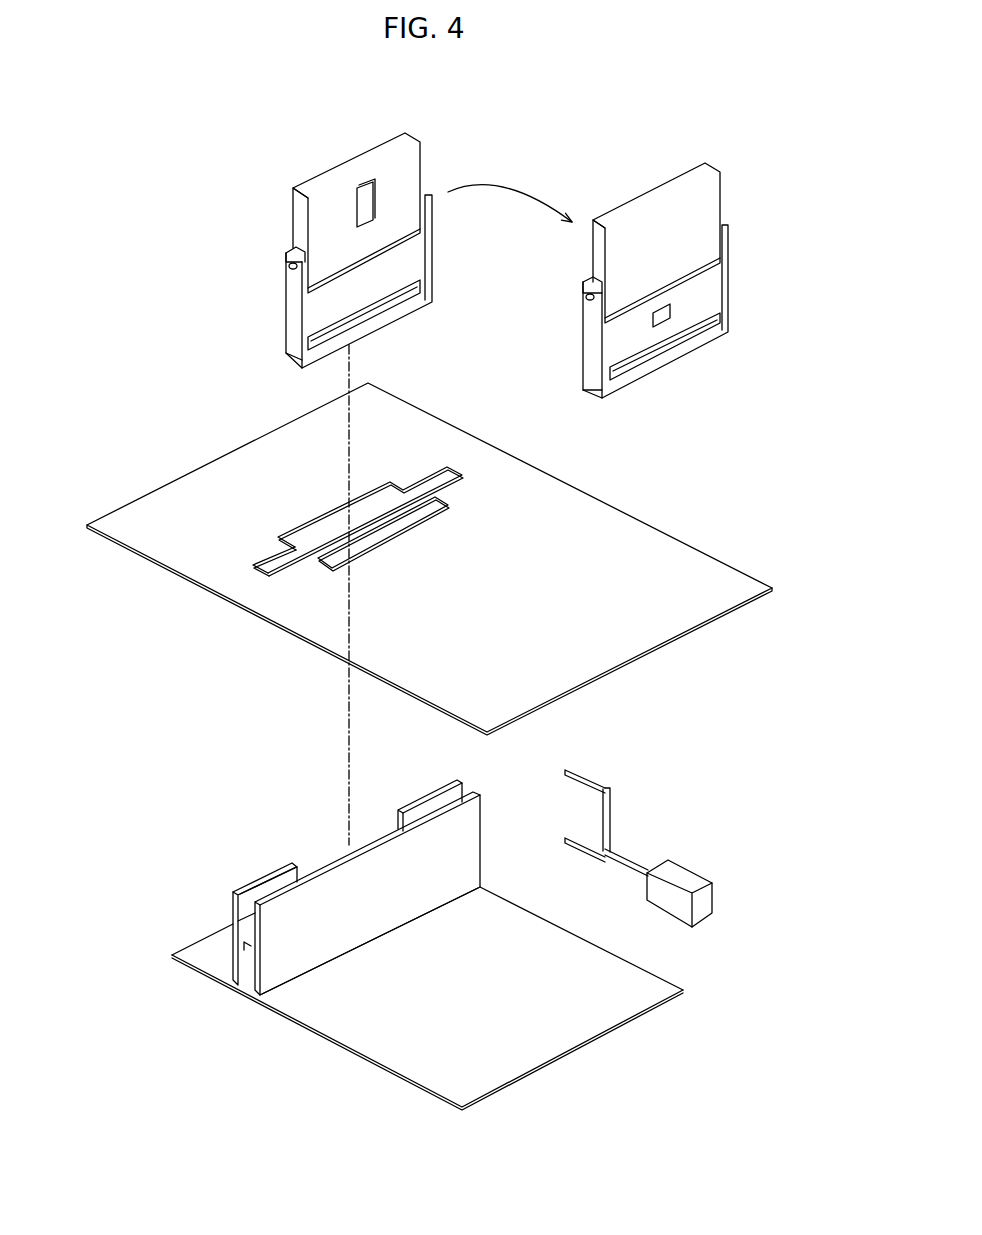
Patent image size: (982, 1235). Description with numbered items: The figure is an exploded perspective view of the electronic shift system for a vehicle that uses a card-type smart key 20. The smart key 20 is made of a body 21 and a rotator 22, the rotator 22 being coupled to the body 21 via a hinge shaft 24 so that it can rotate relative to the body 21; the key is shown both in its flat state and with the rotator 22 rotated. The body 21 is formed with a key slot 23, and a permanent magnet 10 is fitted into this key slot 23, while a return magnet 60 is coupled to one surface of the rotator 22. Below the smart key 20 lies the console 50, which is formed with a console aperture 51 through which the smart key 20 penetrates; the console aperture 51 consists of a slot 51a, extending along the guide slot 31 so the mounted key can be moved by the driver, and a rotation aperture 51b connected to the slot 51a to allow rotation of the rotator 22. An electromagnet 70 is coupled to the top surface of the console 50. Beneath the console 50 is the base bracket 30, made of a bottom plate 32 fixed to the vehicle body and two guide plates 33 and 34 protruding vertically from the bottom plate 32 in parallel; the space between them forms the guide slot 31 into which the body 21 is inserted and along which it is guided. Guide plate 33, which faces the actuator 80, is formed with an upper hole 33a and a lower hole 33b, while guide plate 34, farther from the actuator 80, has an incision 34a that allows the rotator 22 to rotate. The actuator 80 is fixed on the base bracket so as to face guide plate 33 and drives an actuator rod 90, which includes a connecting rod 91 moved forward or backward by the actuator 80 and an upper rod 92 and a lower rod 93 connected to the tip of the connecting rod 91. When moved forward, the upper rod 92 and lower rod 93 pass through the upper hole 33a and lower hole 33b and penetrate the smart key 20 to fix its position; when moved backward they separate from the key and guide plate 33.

The permanent magnet 10 is at (671, 318).
The card-type smart key 20 is at (465, 233).
The body 21 is at (311, 312).
The rotator 22 is at (395, 145).
The key slot 23 is at (392, 315).
The hinge shaft 24 is at (284, 263).
The base bracket 30 is at (406, 933).
The guide slot 31 is at (248, 942).
The bottom plate 32 is at (583, 1023).
The guide plate 33 is at (353, 927).
The upper hole 33a is at (370, 860).
The lower hole 33b is at (370, 920).
The guide plate 34 is at (221, 887).
The incision 34a is at (312, 860).
The console 50 is at (420, 559).
The console aperture 51 is at (265, 534).
The slot 51a is at (258, 571).
The rotation aperture 51b is at (300, 525).
The return magnet 60 is at (363, 193).
The electromagnet 70 is at (447, 505).
The actuator 80 is at (688, 873).
The actuator rod 90 is at (621, 796).
The connecting rod 91 is at (567, 838).
The upper rod 92 is at (590, 775).
The lower rod 93 is at (633, 855).